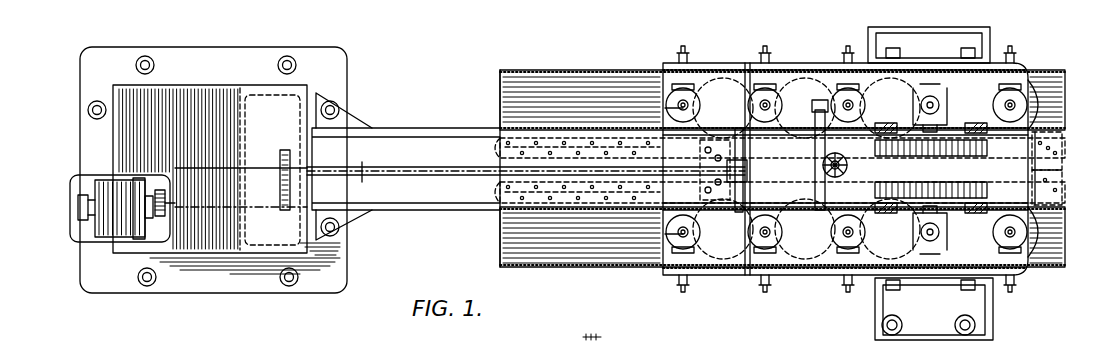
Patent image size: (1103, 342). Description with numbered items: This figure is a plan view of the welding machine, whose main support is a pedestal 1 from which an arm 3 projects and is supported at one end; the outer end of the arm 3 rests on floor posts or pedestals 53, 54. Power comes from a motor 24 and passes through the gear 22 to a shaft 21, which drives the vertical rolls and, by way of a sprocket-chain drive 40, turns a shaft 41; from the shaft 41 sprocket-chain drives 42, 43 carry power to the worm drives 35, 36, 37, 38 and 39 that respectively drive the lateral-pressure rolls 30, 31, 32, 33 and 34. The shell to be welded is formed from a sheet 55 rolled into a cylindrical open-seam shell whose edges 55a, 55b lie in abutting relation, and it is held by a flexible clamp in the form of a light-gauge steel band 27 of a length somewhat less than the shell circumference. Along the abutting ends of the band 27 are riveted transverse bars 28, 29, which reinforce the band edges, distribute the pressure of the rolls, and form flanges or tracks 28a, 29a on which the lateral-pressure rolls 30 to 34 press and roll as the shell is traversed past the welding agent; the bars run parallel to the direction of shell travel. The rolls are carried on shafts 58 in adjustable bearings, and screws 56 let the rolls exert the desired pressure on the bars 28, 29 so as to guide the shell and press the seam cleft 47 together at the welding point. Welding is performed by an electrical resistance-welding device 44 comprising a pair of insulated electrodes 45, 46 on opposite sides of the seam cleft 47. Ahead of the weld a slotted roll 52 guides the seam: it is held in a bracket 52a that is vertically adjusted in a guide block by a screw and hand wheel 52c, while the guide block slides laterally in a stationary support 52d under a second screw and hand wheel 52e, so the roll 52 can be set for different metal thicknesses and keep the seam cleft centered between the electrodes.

The pedestal 1 is at (140, 143).
The arm 3 is at (425, 128).
The shaft 21 is at (210, 169).
The gear 22 is at (163, 193).
The motor 24 is at (110, 236).
The band 27 is at (538, 267).
The transverse bar 28 is at (590, 138).
The flange or track 28a is at (548, 138).
The transverse bar 29 is at (600, 205).
The flange or track 29a is at (555, 205).
The lateral-pressure roll 30 is at (665, 82).
The lateral-pressure roll 31 is at (747, 85).
The lateral-pressure roll 32 is at (820, 100).
The lateral-pressure roll 33 is at (922, 62).
The lateral-pressure roll 34 is at (1036, 78).
The worm drive 35 is at (690, 86).
The worm drive 36 is at (770, 86).
The worm drive 37 is at (848, 86).
The worm drive 38 is at (936, 86).
The worm drive 39 is at (1016, 86).
The sprocket-chain drive 40 is at (285, 212).
The shaft 41 is at (455, 168).
The sprocket-chain drive 42 is at (735, 262).
The sprocket-chain drive 43 is at (739, 125).
The electrical resistance-welding device 44 is at (960, 135).
The electrode 45 is at (1060, 148).
The electrode 46 is at (1057, 187).
The seam cleft 47 is at (822, 200).
The slotted roll 52 is at (890, 168).
The bracket 52a is at (814, 108).
The screw and hand wheel 52c is at (814, 228).
The stationary support 52d is at (732, 228).
The screw and hand wheel 52e is at (732, 108).
The floor post or pedestal 53 is at (875, 308).
The floor post or pedestal 54 is at (990, 42).
The sheet 55 is at (500, 250).
The edge 55a is at (500, 177).
The edge 55b is at (500, 148).
The screw 56 is at (681, 48).
The shaft 58 is at (665, 109).